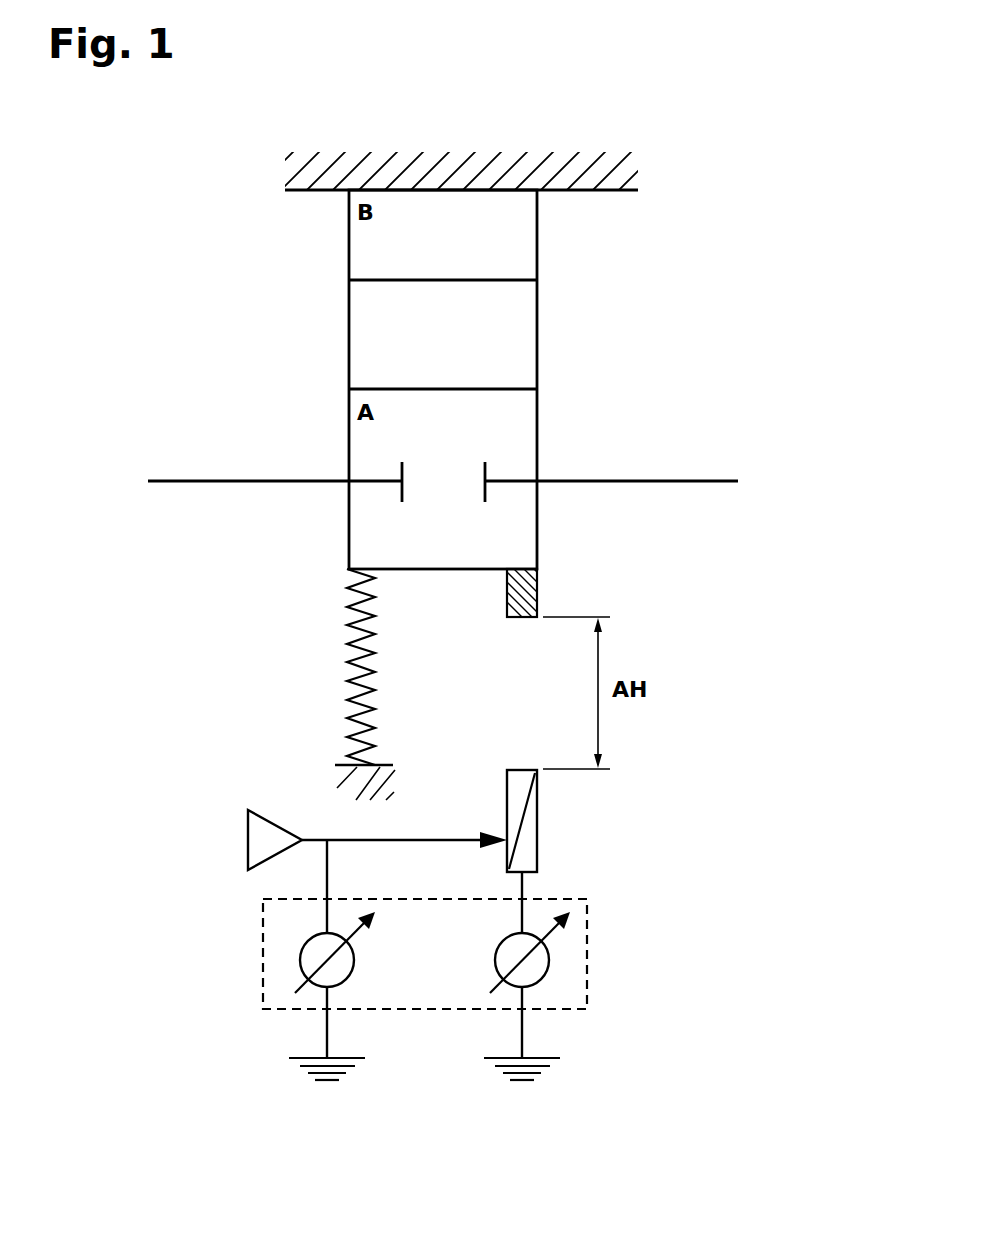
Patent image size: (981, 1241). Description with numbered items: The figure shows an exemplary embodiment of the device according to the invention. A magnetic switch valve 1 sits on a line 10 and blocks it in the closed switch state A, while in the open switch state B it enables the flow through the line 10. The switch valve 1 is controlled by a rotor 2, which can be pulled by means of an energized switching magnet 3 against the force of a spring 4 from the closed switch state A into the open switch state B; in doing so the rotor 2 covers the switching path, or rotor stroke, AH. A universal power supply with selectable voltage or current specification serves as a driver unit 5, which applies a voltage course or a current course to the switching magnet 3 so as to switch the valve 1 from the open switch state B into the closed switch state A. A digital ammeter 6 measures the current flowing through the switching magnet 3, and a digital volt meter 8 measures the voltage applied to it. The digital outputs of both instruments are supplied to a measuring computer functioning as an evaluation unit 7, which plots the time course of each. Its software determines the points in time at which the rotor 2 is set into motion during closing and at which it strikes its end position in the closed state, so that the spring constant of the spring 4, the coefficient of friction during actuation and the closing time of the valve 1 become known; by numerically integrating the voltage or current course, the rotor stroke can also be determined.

The magnetic switch valve 1 is at (593, 187).
The line 10 is at (700, 473).
The rotor 2 is at (537, 592).
The switching magnet 3 is at (537, 820).
The spring 4 is at (350, 666).
The driver unit 5 is at (248, 840).
The digital ammeter 6 is at (545, 978).
The evaluation unit 7 is at (588, 936).
The digital volt meter 8 is at (300, 952).